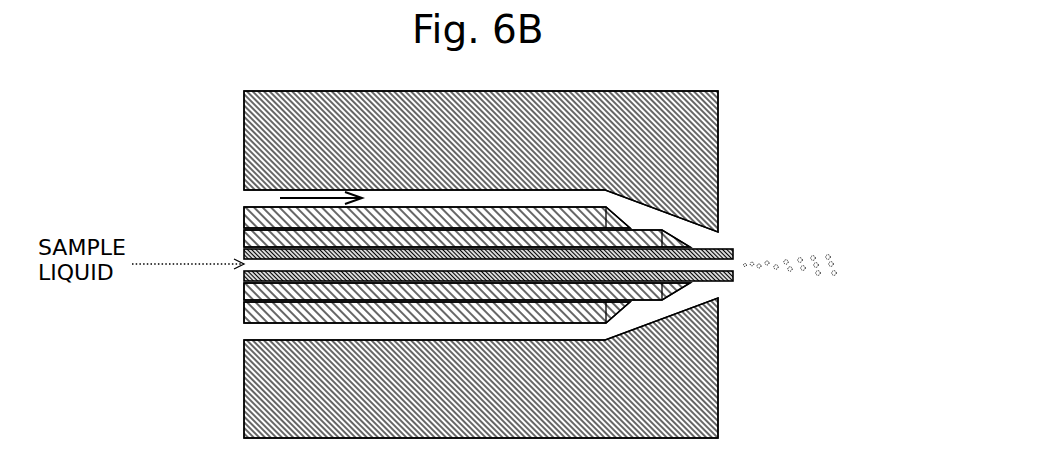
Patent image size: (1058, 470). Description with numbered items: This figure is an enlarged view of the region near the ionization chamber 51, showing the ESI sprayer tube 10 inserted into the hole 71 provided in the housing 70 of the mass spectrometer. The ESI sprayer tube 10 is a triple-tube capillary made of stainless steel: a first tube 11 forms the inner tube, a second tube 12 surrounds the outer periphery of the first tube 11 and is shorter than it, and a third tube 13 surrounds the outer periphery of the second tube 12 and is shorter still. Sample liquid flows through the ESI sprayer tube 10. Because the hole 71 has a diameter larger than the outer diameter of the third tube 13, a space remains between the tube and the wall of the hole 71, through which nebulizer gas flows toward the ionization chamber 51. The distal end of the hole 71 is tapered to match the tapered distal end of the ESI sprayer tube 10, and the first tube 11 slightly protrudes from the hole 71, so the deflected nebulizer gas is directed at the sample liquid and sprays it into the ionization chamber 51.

The housing 70 is at (243, 153).
The hole 71 is at (238, 199).
The ESI sprayer tube 10 is at (426, 277).
The first tube 11 is at (243, 276).
The second tube 12 is at (243, 291).
The third tube 13 is at (243, 311).
The ionization chamber 51 is at (826, 228).